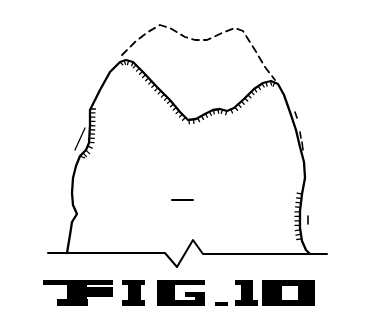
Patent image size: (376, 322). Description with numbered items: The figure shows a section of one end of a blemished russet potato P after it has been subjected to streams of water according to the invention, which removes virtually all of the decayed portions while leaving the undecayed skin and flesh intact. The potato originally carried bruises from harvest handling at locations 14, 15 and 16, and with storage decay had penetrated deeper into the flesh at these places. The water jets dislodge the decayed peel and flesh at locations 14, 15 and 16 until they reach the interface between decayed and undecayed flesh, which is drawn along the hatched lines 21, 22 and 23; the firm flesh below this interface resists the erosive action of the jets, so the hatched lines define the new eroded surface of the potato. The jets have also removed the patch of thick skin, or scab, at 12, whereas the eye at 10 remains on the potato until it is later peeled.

The eye 10 is at (77, 215).
The patch of thick skin 12 is at (298, 122).
The bruise location 14 is at (85, 119).
The bruise location 15 is at (243, 33).
The bruise location 16 is at (308, 234).
The hatched line 21 is at (82, 140).
The hatched line 22 is at (153, 84).
The hatched line 23 is at (305, 213).